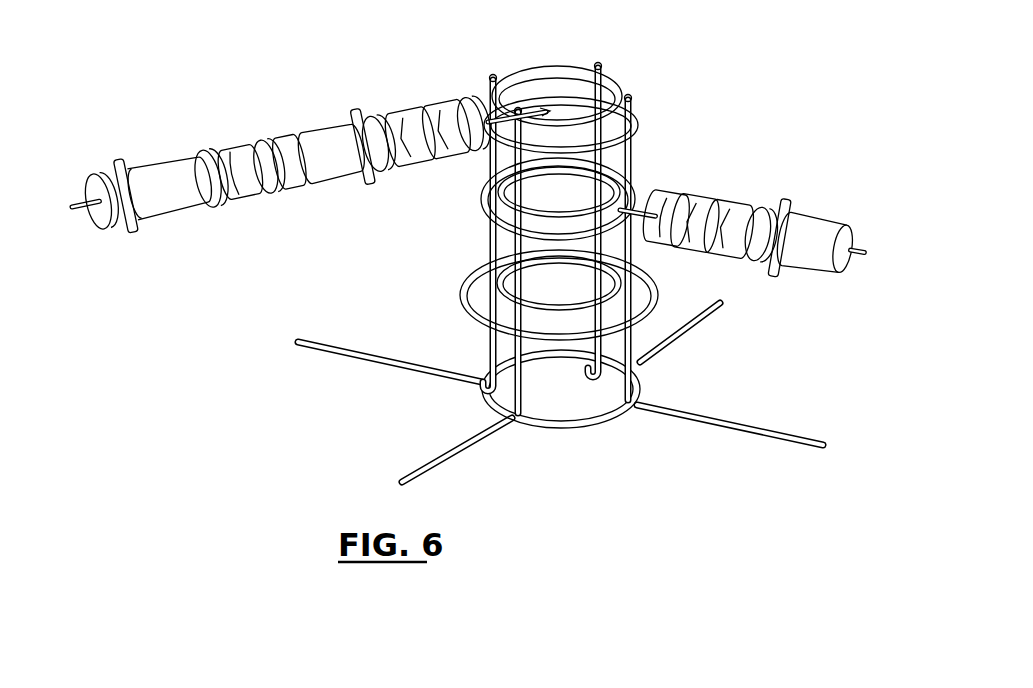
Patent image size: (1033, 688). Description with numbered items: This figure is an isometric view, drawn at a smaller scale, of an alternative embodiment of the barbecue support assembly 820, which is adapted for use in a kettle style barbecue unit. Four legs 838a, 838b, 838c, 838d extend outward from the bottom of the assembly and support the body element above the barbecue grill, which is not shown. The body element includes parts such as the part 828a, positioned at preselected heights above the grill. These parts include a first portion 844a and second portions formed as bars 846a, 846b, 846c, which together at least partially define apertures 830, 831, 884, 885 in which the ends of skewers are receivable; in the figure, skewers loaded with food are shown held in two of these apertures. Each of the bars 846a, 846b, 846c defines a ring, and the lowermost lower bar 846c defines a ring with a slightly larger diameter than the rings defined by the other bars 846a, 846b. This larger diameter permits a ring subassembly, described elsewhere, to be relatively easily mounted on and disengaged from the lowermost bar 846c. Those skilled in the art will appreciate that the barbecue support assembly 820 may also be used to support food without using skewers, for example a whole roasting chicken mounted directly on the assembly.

The barbecue support assembly 820 is at (681, 28).
The part 828a is at (669, 78).
The first portion 844a is at (575, 72).
The bar 846a is at (638, 112).
The bar 846b is at (497, 239).
The lowermost lower bar 846c is at (655, 292).
The aperture 830 is at (560, 172).
The aperture 831 is at (583, 202).
The aperture 884 is at (568, 228).
The aperture 885 is at (502, 226).
The leg 838a is at (793, 443).
The leg 838b is at (422, 470).
The leg 838c is at (320, 353).
The leg 838d is at (703, 316).